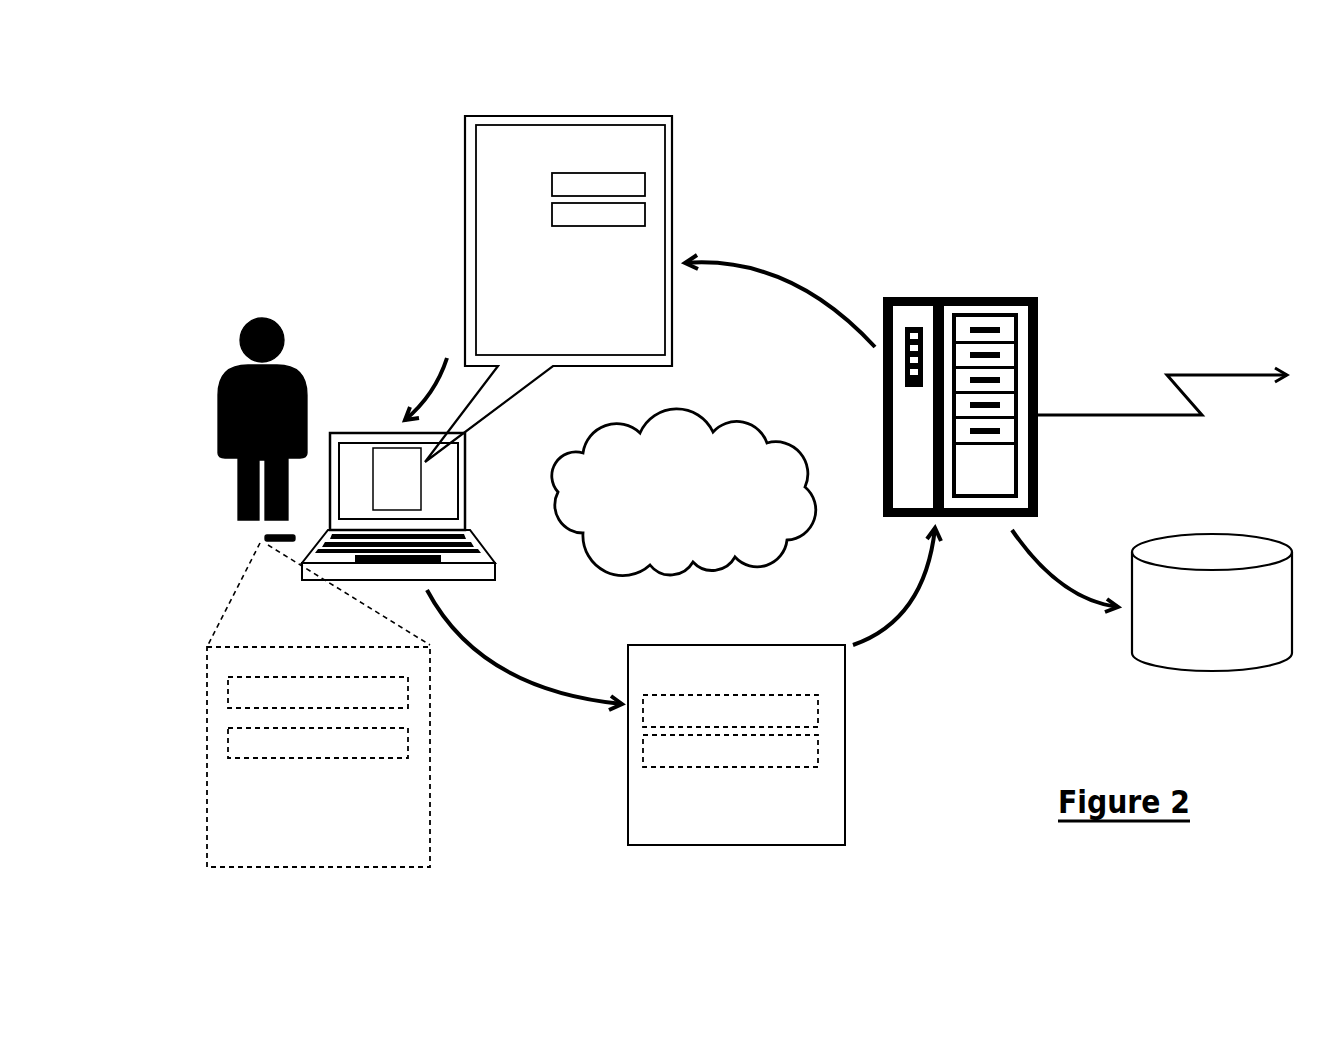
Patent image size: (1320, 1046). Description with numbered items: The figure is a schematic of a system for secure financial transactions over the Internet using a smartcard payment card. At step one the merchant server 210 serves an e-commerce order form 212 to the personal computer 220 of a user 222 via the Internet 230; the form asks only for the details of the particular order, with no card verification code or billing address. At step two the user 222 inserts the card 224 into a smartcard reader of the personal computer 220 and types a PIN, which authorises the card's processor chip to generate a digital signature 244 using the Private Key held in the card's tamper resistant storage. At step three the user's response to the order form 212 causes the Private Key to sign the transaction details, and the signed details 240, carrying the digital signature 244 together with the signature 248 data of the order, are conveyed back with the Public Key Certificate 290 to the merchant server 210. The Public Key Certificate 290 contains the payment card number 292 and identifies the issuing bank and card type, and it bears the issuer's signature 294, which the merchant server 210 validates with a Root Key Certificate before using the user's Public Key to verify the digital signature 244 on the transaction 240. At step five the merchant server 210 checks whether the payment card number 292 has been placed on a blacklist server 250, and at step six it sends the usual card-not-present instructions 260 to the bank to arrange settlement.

The merchant server 210 is at (960, 382).
The order form 212 is at (548, 265).
The personal computer 220 is at (398, 484).
The user 222 is at (242, 419).
The card 224 is at (307, 559).
The Internet 230 is at (684, 517).
The signed details 240 is at (792, 835).
The digital signature 244 is at (685, 765).
The signature 248 is at (685, 725).
The blacklist server 250 is at (1232, 621).
The card-not-present instructions 260 is at (1224, 359).
The Public Key Certificate 290 is at (249, 851).
The payment card number 292 is at (298, 701).
The signature 294 is at (281, 753).